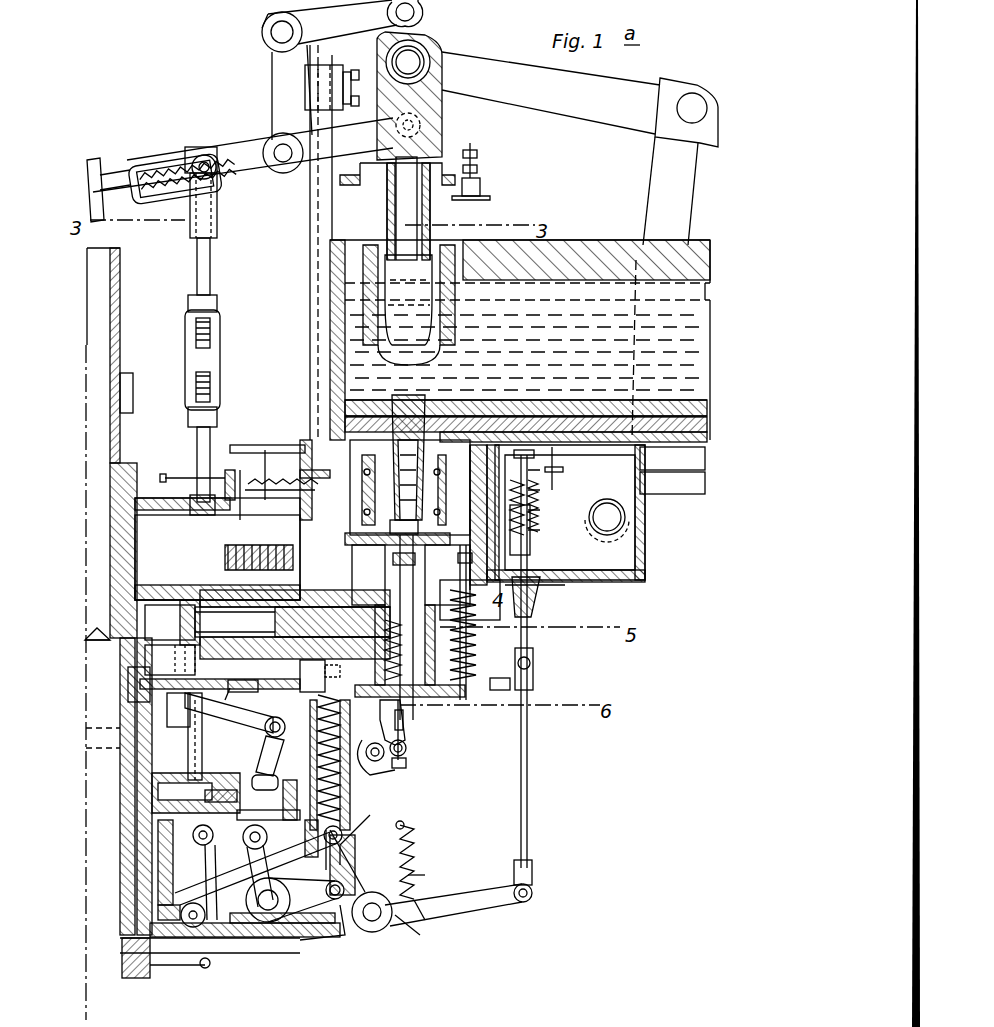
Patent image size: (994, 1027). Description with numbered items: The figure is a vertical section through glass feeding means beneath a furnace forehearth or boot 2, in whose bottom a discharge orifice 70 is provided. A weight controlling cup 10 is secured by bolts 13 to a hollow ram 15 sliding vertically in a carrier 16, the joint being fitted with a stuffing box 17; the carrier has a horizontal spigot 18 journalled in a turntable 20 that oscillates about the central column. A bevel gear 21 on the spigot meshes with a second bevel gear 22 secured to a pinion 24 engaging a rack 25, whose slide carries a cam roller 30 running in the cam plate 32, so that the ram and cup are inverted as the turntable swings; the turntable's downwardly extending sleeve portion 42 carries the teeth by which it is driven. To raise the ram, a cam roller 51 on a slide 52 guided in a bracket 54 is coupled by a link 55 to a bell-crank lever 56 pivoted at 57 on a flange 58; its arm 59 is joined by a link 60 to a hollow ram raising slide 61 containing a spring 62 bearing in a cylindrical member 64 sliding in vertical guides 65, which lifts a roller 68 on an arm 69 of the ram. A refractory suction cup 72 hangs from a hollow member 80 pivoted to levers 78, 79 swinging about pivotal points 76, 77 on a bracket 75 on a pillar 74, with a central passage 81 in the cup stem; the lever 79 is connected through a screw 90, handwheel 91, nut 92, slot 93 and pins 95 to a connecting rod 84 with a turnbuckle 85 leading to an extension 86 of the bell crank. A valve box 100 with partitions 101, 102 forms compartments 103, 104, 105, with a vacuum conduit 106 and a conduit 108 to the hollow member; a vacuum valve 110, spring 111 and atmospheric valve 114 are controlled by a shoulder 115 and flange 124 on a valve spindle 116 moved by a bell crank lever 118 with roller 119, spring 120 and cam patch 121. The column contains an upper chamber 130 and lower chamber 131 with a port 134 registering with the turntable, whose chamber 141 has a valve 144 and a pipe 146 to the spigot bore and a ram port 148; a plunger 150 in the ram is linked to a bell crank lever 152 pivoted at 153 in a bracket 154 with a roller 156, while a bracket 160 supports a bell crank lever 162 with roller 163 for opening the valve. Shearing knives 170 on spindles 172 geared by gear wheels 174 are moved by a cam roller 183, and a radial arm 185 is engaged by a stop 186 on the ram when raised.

The furnace forehearth or boot 2 is at (340, 330).
The weight controlling cup 10 is at (440, 488).
The bolts 13 is at (440, 548).
The ram 15 is at (385, 555).
The carrier 16 is at (465, 650).
The stuffing box 17 is at (465, 662).
The spigot 18 is at (292, 624).
The turntable 20 is at (255, 672).
The bevel gear 21 is at (180, 665).
The second bevel gear 22 is at (170, 500).
The pinion 24 is at (185, 505).
The rack 25 is at (205, 497).
The cam roller 30 is at (270, 500).
The cam plate 32 is at (258, 445).
The sleeve portion 42 is at (118, 735).
The cam roller 51 is at (225, 920).
The slide 52 is at (205, 925).
The bracket 54 is at (256, 872).
The link 55 is at (268, 925).
The bell-crank lever 56 is at (380, 928).
The pivot 57 is at (300, 920).
The flange 58 is at (345, 920).
The arm 59 is at (345, 935).
The link 60 is at (355, 870).
The ram raising slide 61 is at (390, 830).
The spring 62 is at (410, 755).
The cylindrical member 64 is at (400, 826).
The vertical guides 65 is at (405, 898).
The roller 68 is at (530, 705).
The arm 69 is at (340, 690).
The discharge orifice 70 is at (430, 400).
The suction cup 72 is at (452, 315).
The pillar 74 is at (318, 255).
The bracket 75 is at (305, 87).
The pivotal point 76 is at (270, 32).
The pivotal point 77 is at (282, 160).
The lever 78 is at (335, 18).
The lever 79 is at (322, 182).
The hollow member 80 is at (425, 125).
The central passage 81 is at (405, 208).
The connecting rod 84 is at (212, 268).
The turnbuckle 85 is at (220, 325).
The extension 86 is at (205, 955).
The screw 90 is at (165, 168).
The handwheel 91 is at (92, 188).
The nut 92 is at (206, 148).
The slot 93 is at (198, 200).
The pins 95 is at (208, 174).
The valve box 100 is at (650, 512).
The partition 101 is at (632, 430).
The partition 102 is at (650, 545).
The upper compartment 103 is at (600, 455).
The intermediate compartment 104 is at (705, 450).
The lower compartment 105 is at (540, 555).
The conduit 106 is at (690, 482).
The conduit 108 is at (680, 200).
The vacuum valve 110 is at (510, 505).
The spring 111 is at (633, 410).
The atmospheric valve 114 is at (540, 550).
The shoulder 115 is at (540, 580).
The valve spindle 116 is at (430, 635).
The bell crank lever 118 is at (502, 896).
The roller 119 is at (380, 790).
The spring 120 is at (428, 873).
The cam patch 121 is at (290, 790).
The flange 124 is at (553, 475).
The upper chamber 130 is at (107, 358).
The lower chamber 131 is at (211, 808).
The port 134 is at (130, 648).
The chamber 141 is at (190, 668).
The valve 144 is at (172, 622).
The pipe 146 is at (292, 622).
The port 148 is at (550, 600).
The plunger 150 is at (448, 640).
The bell crank lever 152 is at (380, 770).
The pivot 153 is at (375, 780).
The bracket 154 is at (410, 740).
The roller 156 is at (415, 718).
The bracket 160 is at (190, 745).
The bell crank lever 162 is at (195, 718).
The roller 163 is at (290, 920).
The shearing knives 170 is at (240, 485).
The spindle 172 is at (305, 400).
The gear wheels 174 is at (305, 470).
The cam roller 183 is at (240, 490).
The radial arm 185 is at (310, 690).
The stop 186 is at (505, 685).